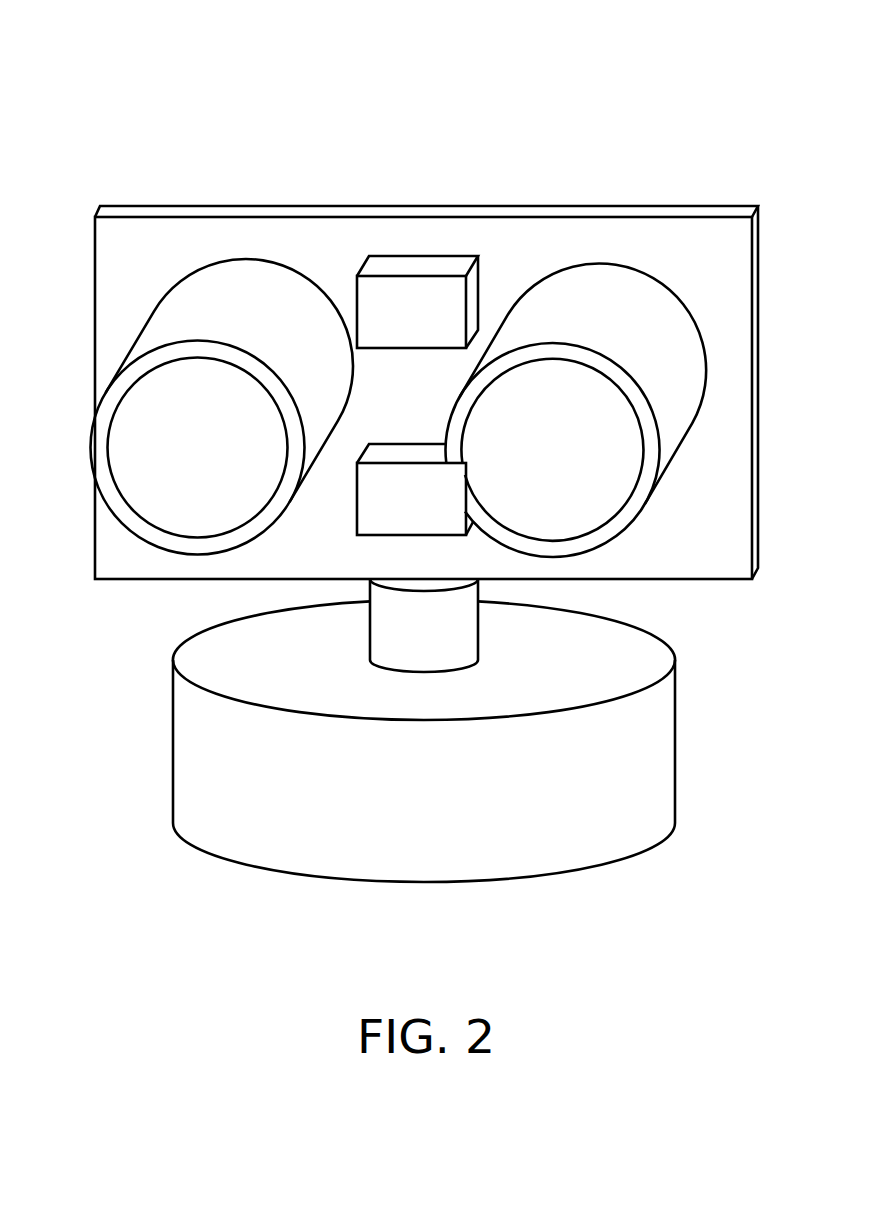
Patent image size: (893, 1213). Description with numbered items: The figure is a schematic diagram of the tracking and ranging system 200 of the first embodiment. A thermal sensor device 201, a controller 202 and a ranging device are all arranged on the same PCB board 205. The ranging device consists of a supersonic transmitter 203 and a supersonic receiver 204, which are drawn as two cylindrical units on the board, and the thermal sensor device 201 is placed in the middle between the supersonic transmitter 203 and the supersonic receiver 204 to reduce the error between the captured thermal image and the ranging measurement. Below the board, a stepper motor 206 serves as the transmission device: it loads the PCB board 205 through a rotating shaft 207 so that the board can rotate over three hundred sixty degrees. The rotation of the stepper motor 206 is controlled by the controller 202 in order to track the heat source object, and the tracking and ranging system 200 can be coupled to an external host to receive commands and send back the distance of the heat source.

The tracking and ranging system 200 is at (85, 65).
The thermal sensor device 201 is at (417, 265).
The controller 202 is at (368, 505).
The supersonic transmitter 203 is at (242, 295).
The supersonic receiver 204 is at (593, 293).
The PCB board 205 is at (142, 214).
The stepper motor 206 is at (660, 763).
The rotating shaft 207 is at (465, 638).